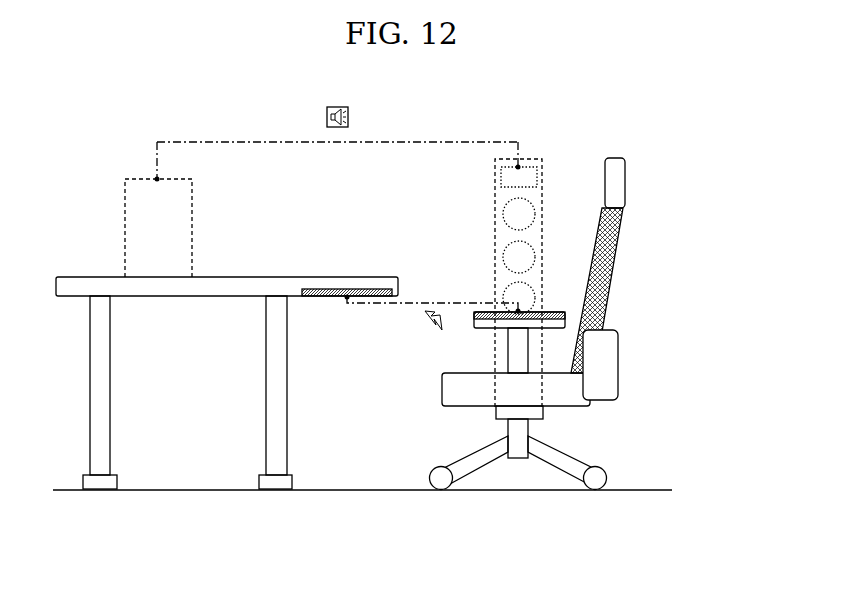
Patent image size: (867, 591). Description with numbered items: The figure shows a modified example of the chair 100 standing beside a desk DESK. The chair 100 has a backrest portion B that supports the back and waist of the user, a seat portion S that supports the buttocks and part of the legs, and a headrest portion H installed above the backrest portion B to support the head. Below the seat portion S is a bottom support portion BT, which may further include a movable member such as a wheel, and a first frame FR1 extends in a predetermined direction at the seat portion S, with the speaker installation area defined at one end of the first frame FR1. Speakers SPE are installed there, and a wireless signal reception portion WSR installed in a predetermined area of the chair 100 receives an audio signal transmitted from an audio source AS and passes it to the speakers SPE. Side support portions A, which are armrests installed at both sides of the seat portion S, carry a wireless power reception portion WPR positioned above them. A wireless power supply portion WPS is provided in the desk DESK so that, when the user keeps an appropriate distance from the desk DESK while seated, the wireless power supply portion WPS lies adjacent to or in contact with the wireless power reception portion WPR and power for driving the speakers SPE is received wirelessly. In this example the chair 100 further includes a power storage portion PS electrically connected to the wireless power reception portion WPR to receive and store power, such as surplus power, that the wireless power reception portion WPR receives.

The chair 100 is at (551, 306).
The desk DESK is at (78, 283).
The audio source AS is at (143, 188).
The wireless power supply portion WPS is at (330, 290).
The wireless signal reception portion WSR is at (500, 178).
The speaker SPE is at (500, 232).
The wireless power reception portion WPR is at (563, 311).
The headrest portion H is at (617, 180).
The backrest portion B is at (614, 233).
The power storage portion PS is at (610, 362).
The side support portion A is at (513, 355).
The seat portion S is at (450, 385).
The bottom support portion BT is at (513, 427).
The first frame FR1 is at (554, 414).